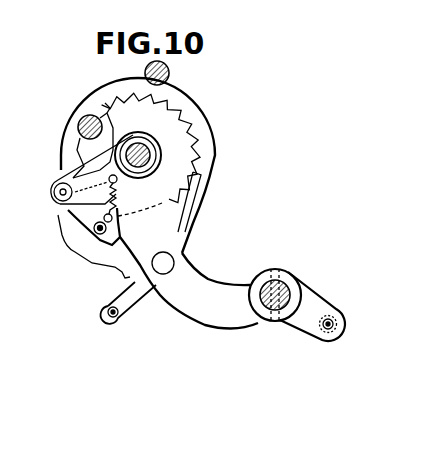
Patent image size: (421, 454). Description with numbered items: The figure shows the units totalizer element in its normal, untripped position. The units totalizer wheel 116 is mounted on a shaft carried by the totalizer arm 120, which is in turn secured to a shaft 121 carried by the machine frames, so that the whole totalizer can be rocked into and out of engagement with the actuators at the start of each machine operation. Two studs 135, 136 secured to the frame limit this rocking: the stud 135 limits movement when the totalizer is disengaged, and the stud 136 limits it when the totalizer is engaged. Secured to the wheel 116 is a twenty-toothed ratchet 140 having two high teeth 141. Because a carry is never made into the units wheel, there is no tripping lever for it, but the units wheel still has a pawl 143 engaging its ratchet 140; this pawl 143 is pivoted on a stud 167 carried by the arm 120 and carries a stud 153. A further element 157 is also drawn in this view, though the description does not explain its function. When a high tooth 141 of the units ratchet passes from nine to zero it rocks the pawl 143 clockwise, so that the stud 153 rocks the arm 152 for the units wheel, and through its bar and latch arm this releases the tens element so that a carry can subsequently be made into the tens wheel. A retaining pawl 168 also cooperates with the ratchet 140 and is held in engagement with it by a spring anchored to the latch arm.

The totalizer wheel 116 is at (210, 142).
The totalizer arm 120 is at (198, 275).
The shaft 121 is at (265, 297).
The stud 135 is at (80, 128).
The stud 136 is at (168, 70).
The ratchet 140 is at (185, 110).
The high tooth 141 is at (152, 99).
The pawl 143 is at (69, 212).
The arm 152 is at (91, 248).
The stud 153 is at (115, 232).
The spring 157 is at (133, 198).
The stud 167 is at (62, 182).
The retaining pawl 168 is at (187, 216).